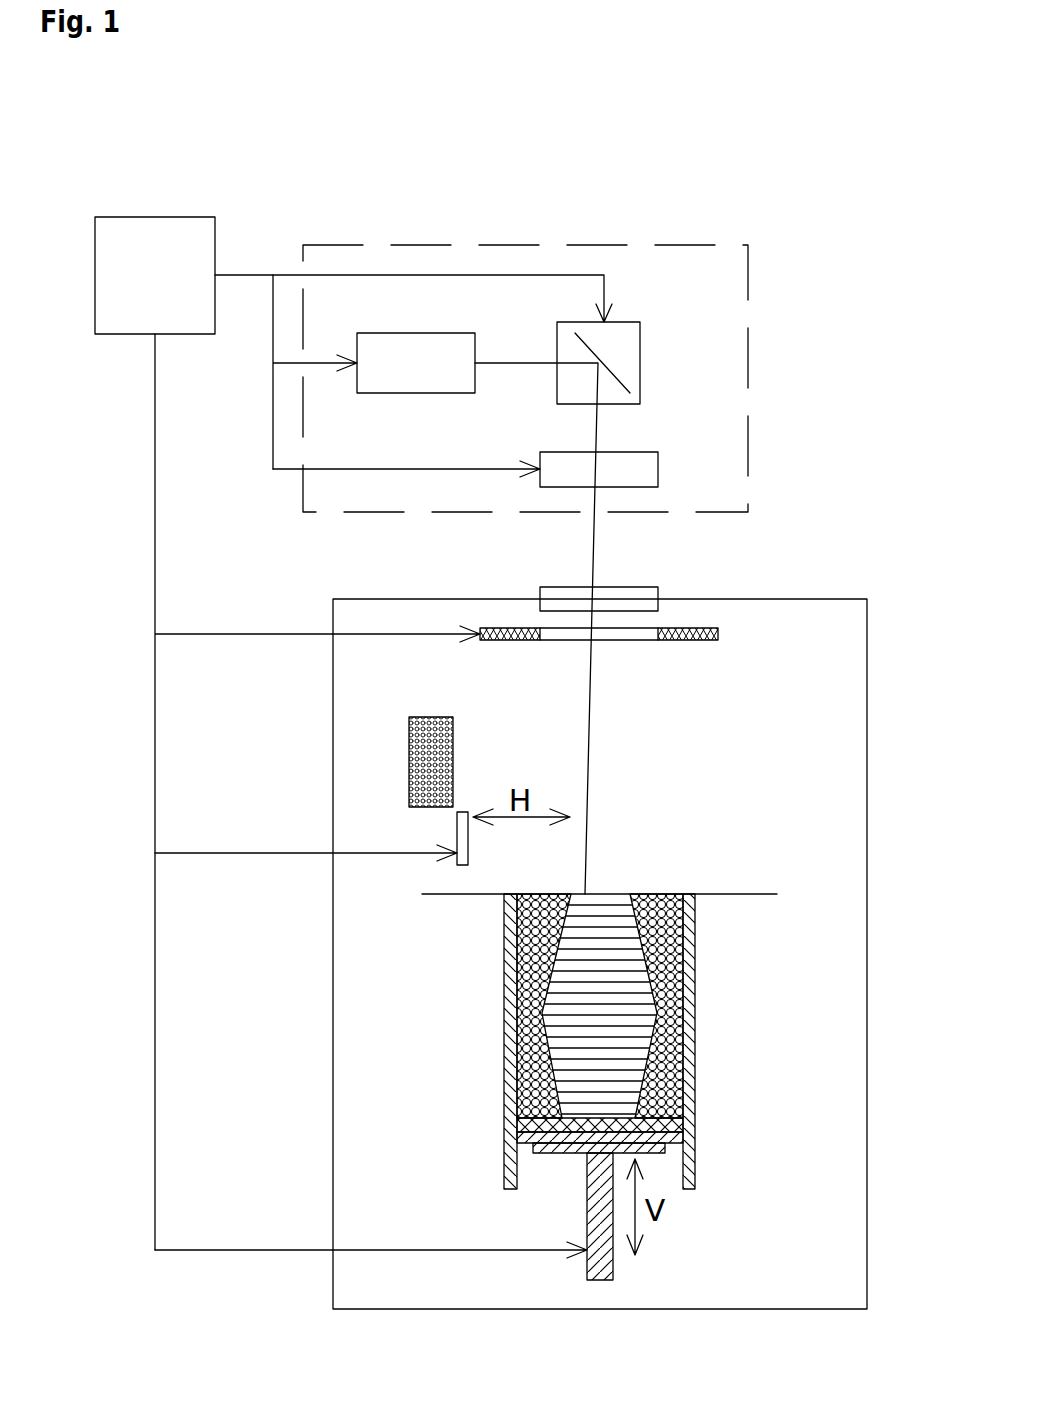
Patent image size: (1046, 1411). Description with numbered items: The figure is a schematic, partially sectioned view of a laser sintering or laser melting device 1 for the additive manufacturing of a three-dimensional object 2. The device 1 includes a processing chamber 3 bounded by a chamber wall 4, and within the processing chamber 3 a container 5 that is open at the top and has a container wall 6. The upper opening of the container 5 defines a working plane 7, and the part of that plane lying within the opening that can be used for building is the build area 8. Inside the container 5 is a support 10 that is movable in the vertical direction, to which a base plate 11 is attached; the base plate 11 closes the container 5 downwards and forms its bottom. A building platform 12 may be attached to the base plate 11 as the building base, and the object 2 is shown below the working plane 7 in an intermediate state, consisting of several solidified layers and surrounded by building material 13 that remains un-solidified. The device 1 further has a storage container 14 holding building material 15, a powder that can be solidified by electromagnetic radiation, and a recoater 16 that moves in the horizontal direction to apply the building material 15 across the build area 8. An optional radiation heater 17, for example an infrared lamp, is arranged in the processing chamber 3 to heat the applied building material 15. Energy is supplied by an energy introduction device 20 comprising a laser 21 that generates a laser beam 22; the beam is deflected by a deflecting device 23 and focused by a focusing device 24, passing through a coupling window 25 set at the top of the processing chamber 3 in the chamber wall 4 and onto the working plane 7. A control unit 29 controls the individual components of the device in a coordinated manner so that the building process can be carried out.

The laser sintering or laser melting device 1 is at (846, 226).
The object 2 is at (637, 948).
The processing chamber 3 is at (550, 901).
The chamber wall 4 is at (333, 1095).
The container 5 is at (592, 1041).
The container wall 6 is at (693, 1040).
The working plane 7 is at (745, 894).
The build area 8 is at (657, 894).
The support 10 is at (577, 1152).
The base plate 11 is at (540, 1145).
The building platform 12 is at (518, 1122).
The building material remaining un-solidified 13 is at (510, 940).
The storage container 14 is at (428, 716).
The building material 15 is at (448, 760).
The recoater 16 is at (463, 834).
The radiation heater 17 is at (507, 628).
The energy introduction device 20 is at (748, 345).
The laser 21 is at (410, 394).
The laser beam 22 is at (496, 362).
The deflecting device 23 is at (631, 333).
The focusing device 24 is at (630, 461).
The coupling window 25 is at (635, 598).
The control unit 29 is at (353, 737).